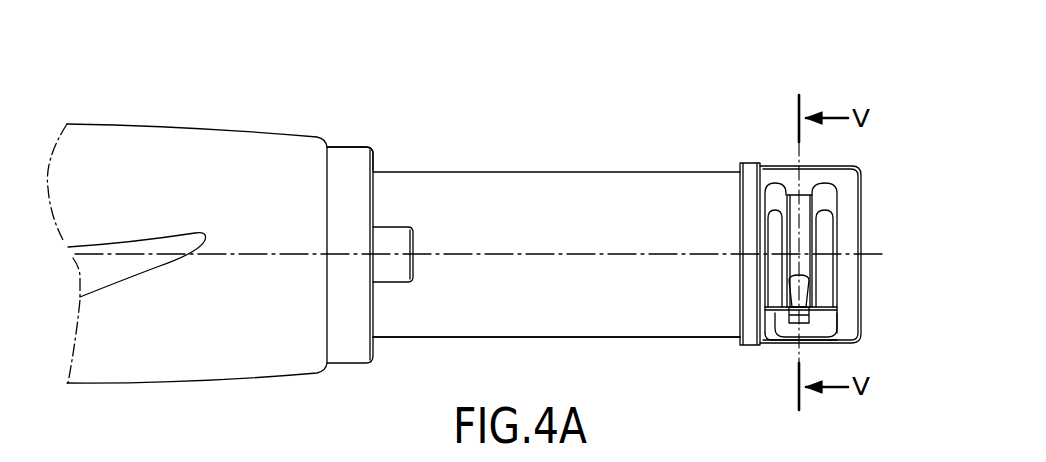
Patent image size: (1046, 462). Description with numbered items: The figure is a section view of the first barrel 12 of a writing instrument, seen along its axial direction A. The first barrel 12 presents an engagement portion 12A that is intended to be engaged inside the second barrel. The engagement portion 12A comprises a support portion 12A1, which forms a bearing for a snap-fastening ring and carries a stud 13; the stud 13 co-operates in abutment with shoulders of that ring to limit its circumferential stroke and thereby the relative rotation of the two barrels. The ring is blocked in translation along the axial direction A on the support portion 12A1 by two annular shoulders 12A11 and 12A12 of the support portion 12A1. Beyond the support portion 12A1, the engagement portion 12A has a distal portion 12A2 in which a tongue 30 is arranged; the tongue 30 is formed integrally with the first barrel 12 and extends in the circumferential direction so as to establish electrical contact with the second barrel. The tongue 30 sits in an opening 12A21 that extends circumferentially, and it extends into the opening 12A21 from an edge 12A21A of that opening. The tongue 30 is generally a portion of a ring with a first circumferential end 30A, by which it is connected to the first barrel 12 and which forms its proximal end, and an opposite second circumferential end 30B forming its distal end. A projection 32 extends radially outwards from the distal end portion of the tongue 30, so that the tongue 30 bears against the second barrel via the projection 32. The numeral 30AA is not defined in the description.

The first barrel 12 is at (302, 115).
The engagement portion 12A is at (555, 172).
The support portion 12A1 is at (604, 338).
The annular shoulder 12A11 is at (740, 168).
The annular shoulder 12A12 is at (375, 163).
The distal portion 12A2 is at (818, 166).
The opening 12A21 is at (825, 308).
The edge 12A21A is at (830, 183).
The stud 13 is at (400, 243).
The tongue 30 is at (805, 238).
The first circumferential end 30A is at (781, 200).
The valve plug 30AA is at (782, 288).
The second circumferential end 30B is at (780, 342).
The projection 32 is at (810, 335).
The axial direction A is at (490, 257).